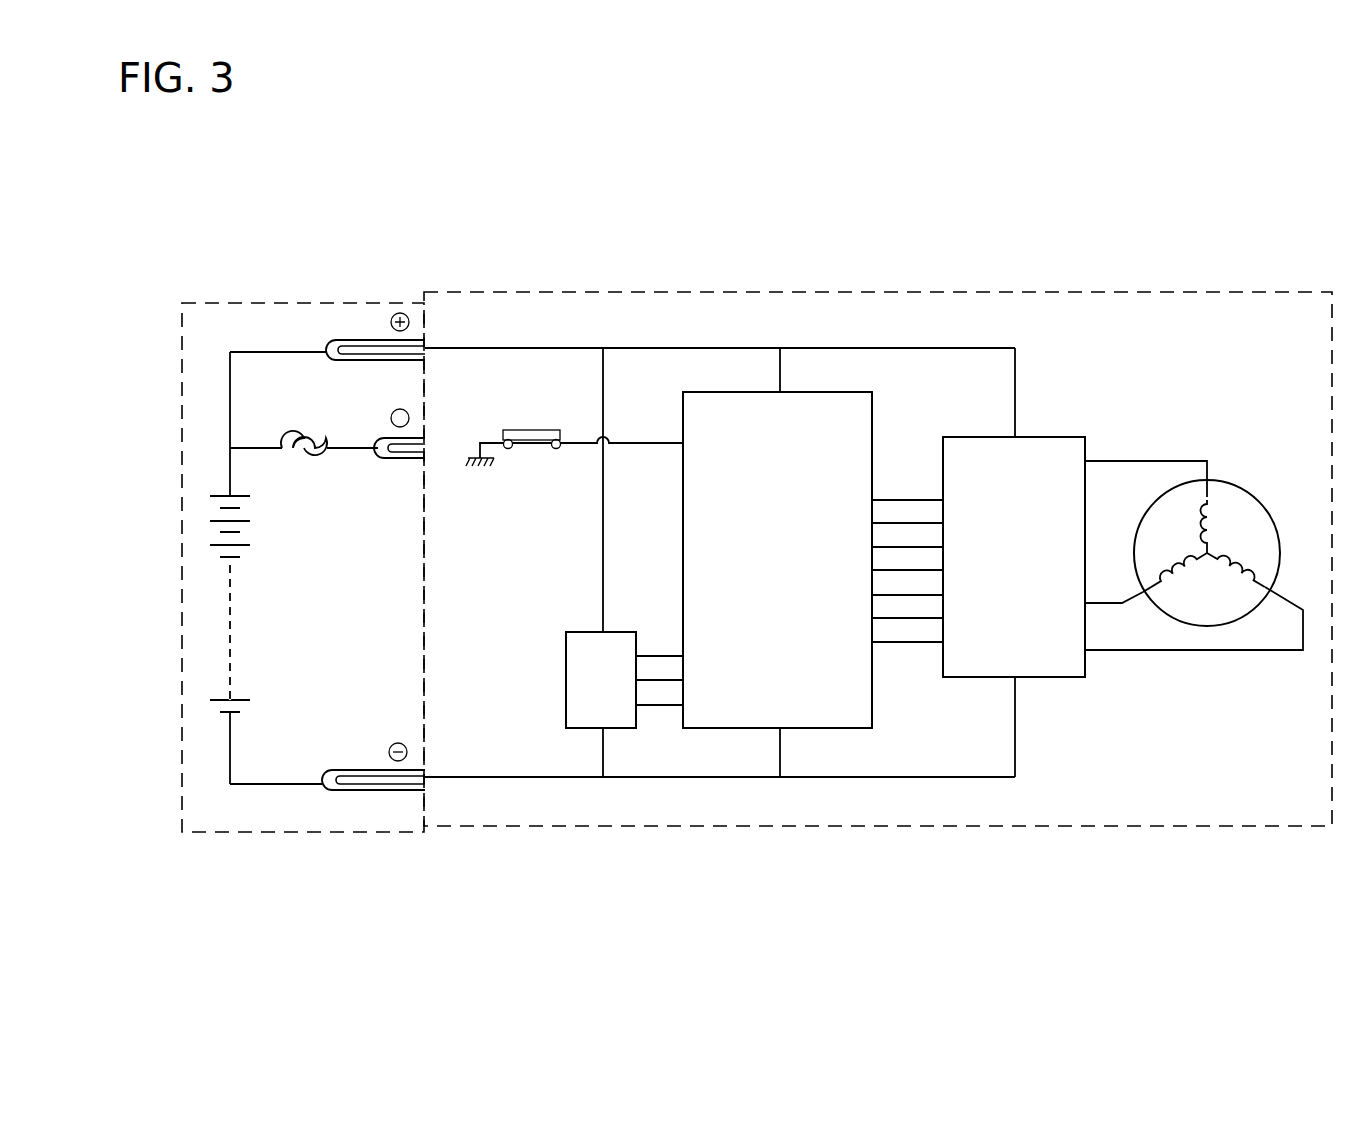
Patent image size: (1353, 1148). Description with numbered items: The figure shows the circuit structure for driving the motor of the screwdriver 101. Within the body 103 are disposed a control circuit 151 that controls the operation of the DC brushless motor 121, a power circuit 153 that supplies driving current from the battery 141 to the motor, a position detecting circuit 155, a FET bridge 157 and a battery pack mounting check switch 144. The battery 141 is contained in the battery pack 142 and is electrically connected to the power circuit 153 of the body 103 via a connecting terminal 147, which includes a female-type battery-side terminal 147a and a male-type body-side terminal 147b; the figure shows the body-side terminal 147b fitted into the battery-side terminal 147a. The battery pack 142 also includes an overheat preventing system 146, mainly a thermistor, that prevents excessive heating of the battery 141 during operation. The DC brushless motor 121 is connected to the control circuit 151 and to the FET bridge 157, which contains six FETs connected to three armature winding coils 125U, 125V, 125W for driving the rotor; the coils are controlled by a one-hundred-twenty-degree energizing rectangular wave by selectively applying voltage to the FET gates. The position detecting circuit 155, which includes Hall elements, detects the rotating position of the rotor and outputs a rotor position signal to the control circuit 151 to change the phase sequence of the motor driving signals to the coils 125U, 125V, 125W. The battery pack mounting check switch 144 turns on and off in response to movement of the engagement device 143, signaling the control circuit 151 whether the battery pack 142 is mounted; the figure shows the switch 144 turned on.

The screwdriver 101 is at (995, 190).
The body 103 is at (1040, 292).
The DC brushless motor 121 is at (1207, 546).
The coil 125U is at (1210, 508).
The coil 125V is at (1172, 593).
The coil 125W is at (1250, 590).
The battery 141 is at (201, 541).
The battery pack 142 is at (240, 303).
The engagement device 143 is at (574, 471).
The battery pack mounting check switch 144 is at (564, 466).
The overheat preventing system 146 is at (365, 429).
The connecting terminal 147 is at (382, 564).
The battery-side terminal 147a is at (334, 340).
The body-side terminal 147b is at (382, 340).
The control circuit 151 is at (826, 403).
The power circuit 153 is at (650, 332).
The position detecting circuit 155 is at (620, 718).
The FET bridge 157 is at (1060, 448).